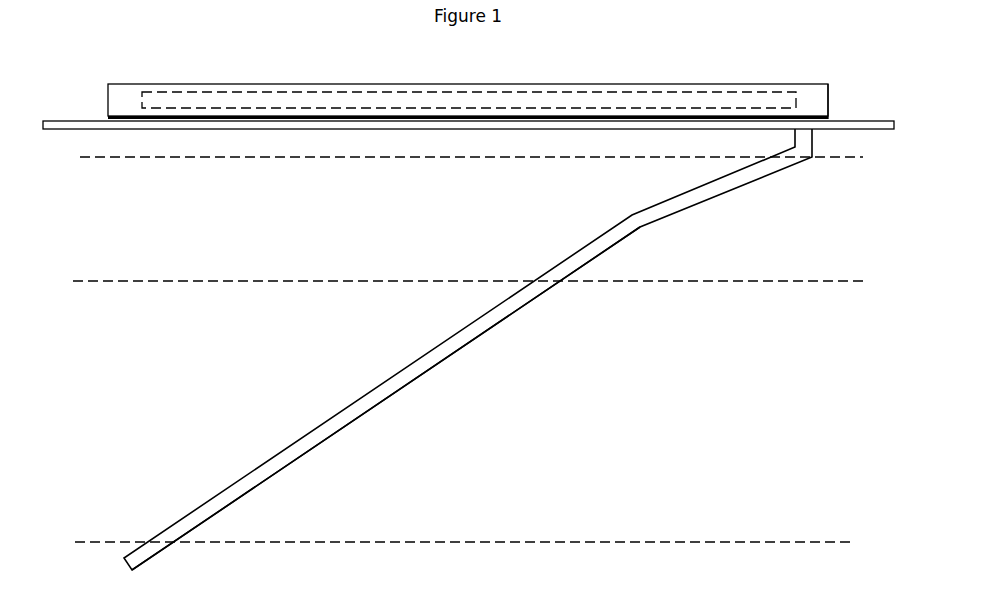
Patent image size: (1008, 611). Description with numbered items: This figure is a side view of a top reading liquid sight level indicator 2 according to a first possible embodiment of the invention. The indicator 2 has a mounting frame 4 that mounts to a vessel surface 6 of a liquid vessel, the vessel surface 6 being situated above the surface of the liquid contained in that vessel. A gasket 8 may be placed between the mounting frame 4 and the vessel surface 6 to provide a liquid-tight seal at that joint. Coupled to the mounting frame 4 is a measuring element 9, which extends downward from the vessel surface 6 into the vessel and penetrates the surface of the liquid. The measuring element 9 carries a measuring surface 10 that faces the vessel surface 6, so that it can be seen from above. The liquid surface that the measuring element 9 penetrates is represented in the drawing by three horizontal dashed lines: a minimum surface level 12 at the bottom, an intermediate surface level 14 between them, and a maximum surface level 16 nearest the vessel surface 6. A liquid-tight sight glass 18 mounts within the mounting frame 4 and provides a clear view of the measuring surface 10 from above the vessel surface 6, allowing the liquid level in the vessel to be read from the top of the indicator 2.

The top reading liquid sight level indicator 2 is at (760, 71).
The mounting frame 4 is at (108, 100).
The vessel surface 6 is at (92, 120).
The gasket 8 is at (830, 119).
The measuring element 9 is at (413, 391).
The measuring surface 10 is at (403, 370).
The minimum surface level 12 is at (617, 542).
The intermediate surface level 14 is at (208, 281).
The maximum surface level 16 is at (210, 157).
The liquid-tight sight glass 18 is at (222, 92).